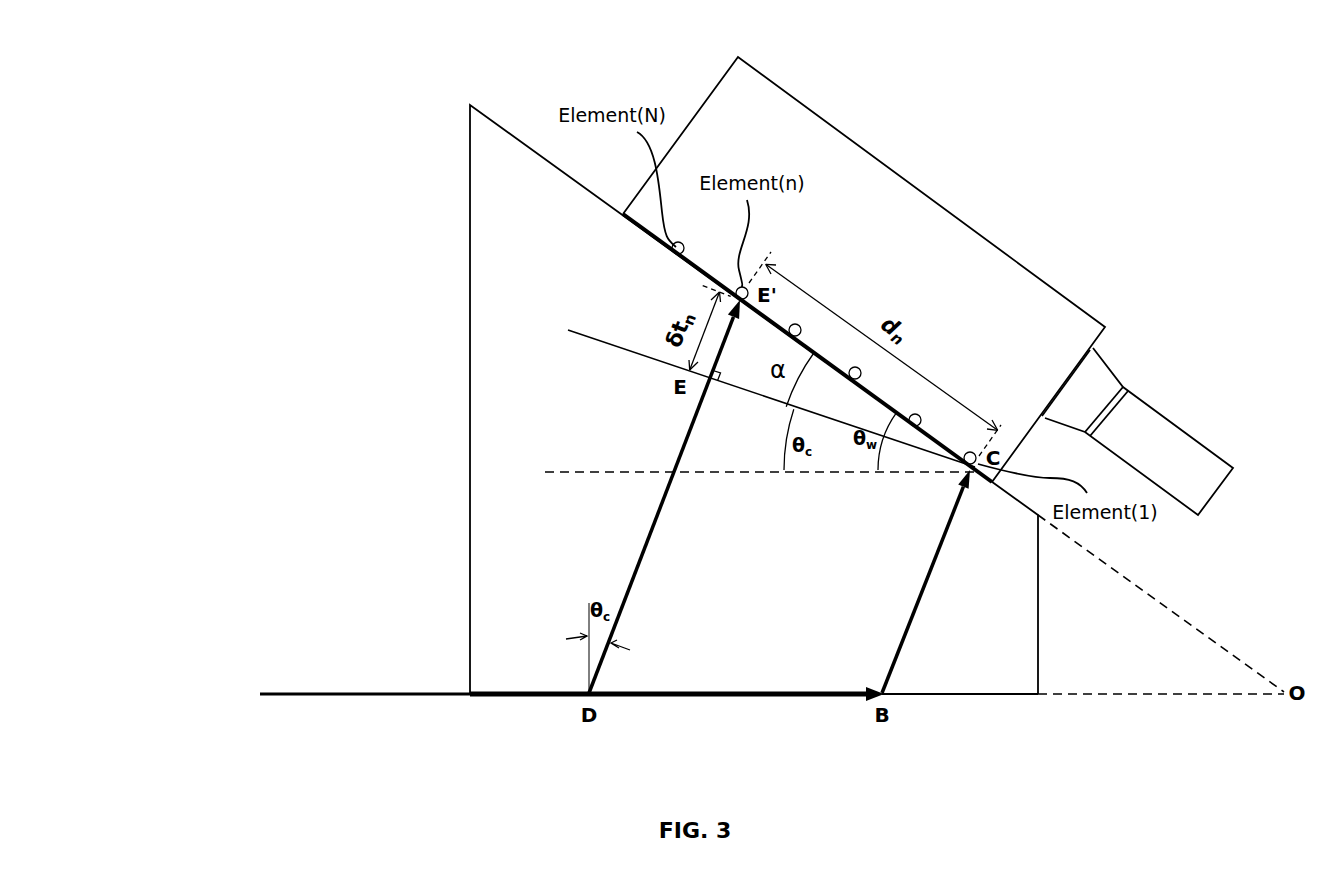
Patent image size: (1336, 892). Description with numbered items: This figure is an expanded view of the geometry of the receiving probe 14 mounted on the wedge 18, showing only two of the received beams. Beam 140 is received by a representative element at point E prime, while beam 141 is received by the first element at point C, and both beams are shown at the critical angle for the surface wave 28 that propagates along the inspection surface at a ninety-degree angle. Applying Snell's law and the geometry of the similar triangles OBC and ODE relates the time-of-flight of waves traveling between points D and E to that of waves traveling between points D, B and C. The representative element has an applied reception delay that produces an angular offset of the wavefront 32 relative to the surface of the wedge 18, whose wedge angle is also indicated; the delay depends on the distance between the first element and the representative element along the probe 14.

The probe 14 is at (752, 90).
The wedge 18 is at (498, 182).
The surface wave 28 is at (320, 697).
The wavefront 32 is at (568, 330).
The beam 140 is at (680, 450).
The beam 141 is at (908, 628).